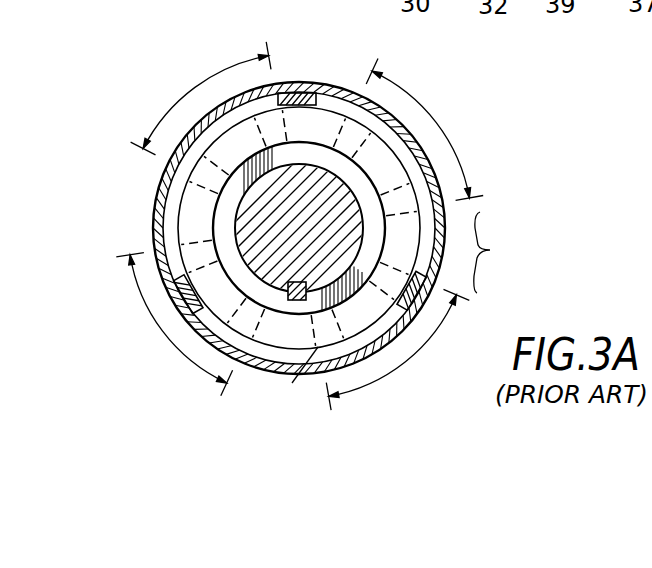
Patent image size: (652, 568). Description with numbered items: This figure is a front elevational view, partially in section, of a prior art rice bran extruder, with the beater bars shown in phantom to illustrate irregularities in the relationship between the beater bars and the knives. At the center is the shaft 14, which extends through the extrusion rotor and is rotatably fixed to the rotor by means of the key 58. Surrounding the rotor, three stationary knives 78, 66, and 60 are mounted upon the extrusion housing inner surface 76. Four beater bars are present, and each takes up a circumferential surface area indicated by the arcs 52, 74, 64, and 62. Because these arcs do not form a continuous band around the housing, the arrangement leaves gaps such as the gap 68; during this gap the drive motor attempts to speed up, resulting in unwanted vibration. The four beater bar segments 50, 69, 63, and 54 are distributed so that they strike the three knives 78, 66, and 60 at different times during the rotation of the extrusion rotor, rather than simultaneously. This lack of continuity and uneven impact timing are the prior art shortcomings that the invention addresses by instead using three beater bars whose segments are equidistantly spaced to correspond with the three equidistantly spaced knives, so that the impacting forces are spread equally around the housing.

The shaft 14 is at (250, 225).
The beater bar segment 50 is at (272, 122).
The arc 52 is at (196, 88).
The beater bar segment 54 is at (213, 229).
The key 58 is at (290, 293).
The stationary knife 60 is at (183, 290).
The arc 62 is at (188, 362).
The beater bar segment 63 is at (293, 379).
The arc 64 is at (427, 347).
The stationary knife 66 is at (412, 298).
The gap 68 is at (503, 252).
The beater bar segment 69 is at (405, 183).
The arc 74 is at (430, 113).
The extrusion housing inner surface 76 is at (397, 90).
The stationary knife 78 is at (303, 85).